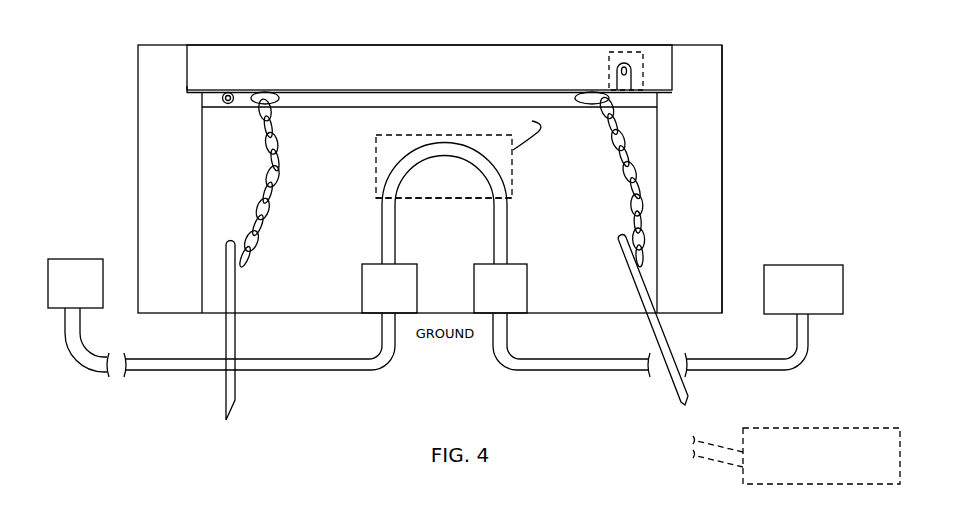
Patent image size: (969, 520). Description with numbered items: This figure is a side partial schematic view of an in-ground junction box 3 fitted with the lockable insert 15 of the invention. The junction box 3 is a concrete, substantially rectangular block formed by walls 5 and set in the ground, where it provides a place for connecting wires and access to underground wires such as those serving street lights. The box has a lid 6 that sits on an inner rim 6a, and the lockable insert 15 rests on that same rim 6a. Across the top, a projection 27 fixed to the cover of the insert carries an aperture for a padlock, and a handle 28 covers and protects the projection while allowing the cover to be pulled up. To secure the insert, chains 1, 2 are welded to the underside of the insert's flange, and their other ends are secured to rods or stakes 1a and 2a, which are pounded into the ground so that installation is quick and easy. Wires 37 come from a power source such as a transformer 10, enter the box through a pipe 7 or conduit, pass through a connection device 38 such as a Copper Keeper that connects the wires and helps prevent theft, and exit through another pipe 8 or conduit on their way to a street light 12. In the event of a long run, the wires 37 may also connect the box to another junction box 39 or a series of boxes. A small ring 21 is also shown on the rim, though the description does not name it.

The chain 1 is at (282, 147).
The stake 1a is at (236, 292).
The chain 2 is at (616, 160).
The stake 2a is at (648, 332).
The junction box 3 is at (726, 90).
The walls 5 is at (722, 181).
The lid 6 is at (424, 77).
The inner rim 6a is at (187, 93).
The pipe 7 is at (527, 291).
The pipe 8 is at (417, 291).
The transformer 10 is at (835, 428).
The street light 12 is at (75, 259).
The lockable insert 15 is at (344, 116).
The eyelet ring 21 is at (228, 106).
The projection 27 is at (620, 68).
The handle 28 is at (625, 52).
The wires 37 is at (508, 239).
The device 38 is at (449, 199).
The junction box 39 is at (773, 265).